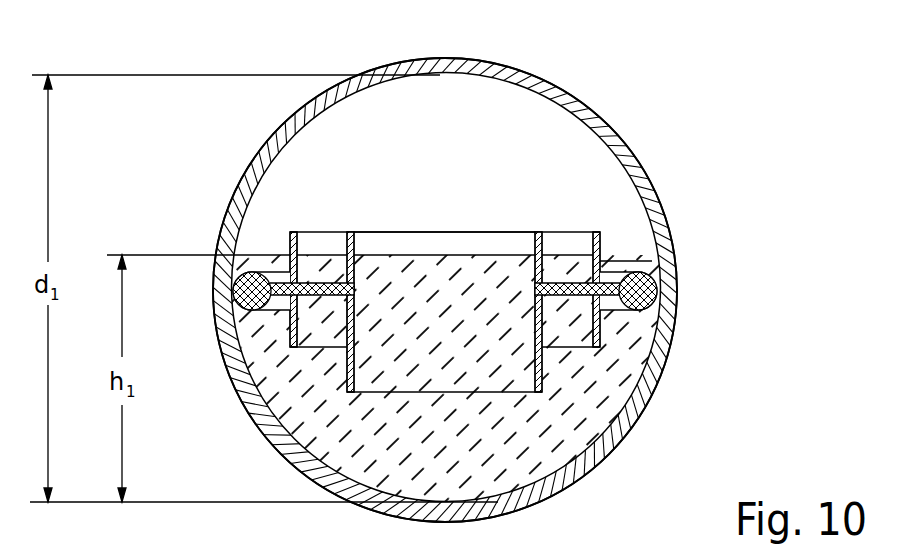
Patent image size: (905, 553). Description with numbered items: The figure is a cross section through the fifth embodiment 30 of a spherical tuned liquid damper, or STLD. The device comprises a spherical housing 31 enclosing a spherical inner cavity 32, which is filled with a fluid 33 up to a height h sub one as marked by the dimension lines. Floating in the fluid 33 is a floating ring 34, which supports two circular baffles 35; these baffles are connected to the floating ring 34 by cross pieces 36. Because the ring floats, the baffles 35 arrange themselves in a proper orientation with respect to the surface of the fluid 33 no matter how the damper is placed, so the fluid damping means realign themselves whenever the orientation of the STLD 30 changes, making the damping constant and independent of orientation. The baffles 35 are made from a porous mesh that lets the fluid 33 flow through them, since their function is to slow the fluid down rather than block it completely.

The fifth embodiment of a spherical tuned liquid damper 30 is at (716, 97).
The spherical housing 31 is at (671, 220).
The spherical inner cavity 32 is at (548, 103).
The fluid 33 is at (625, 364).
The floating ring 34 is at (648, 287).
The circular baffles 35 is at (356, 230).
The cross pieces 36 is at (572, 265).